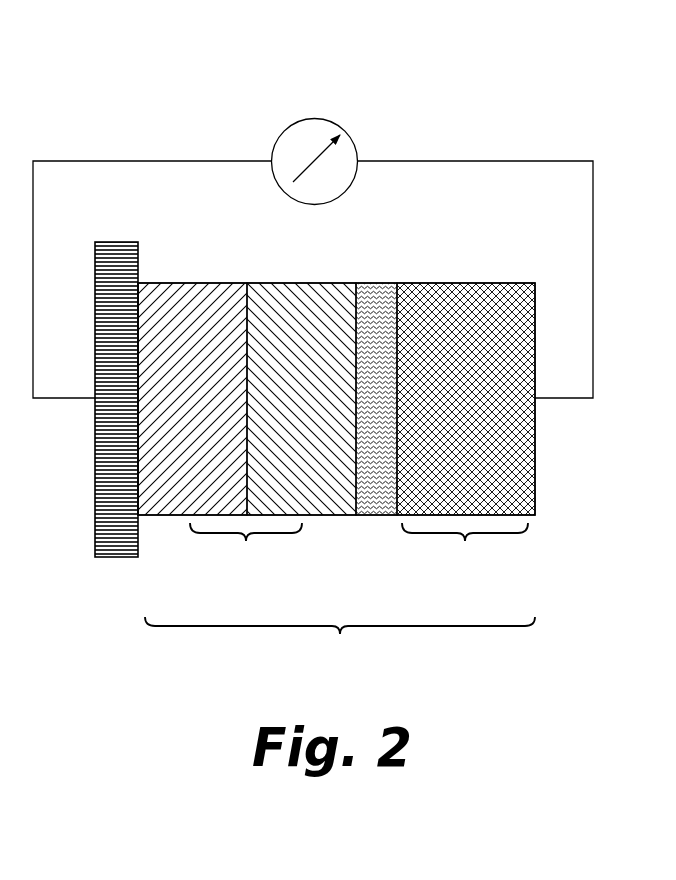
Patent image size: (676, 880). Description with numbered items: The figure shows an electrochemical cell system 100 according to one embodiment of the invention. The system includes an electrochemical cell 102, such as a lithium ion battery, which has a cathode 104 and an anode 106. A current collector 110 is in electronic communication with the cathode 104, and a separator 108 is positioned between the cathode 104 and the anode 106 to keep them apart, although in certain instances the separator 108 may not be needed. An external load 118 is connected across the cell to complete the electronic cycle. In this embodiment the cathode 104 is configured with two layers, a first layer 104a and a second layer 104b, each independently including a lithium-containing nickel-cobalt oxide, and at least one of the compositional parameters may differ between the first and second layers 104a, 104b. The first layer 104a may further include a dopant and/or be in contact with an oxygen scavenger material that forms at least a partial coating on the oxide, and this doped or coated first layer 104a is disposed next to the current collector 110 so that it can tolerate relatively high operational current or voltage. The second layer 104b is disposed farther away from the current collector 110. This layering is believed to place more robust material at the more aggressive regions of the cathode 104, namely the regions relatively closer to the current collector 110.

The electrochemical cell system 100 is at (187, 668).
The electrochemical cell 102 is at (549, 492).
The cathode 104 is at (246, 548).
The first layer 104a is at (197, 278).
The second layer 104b is at (308, 278).
The anode 106 is at (466, 433).
The separator 108 is at (378, 532).
The current collector 110 is at (117, 565).
The external load 118 is at (316, 118).